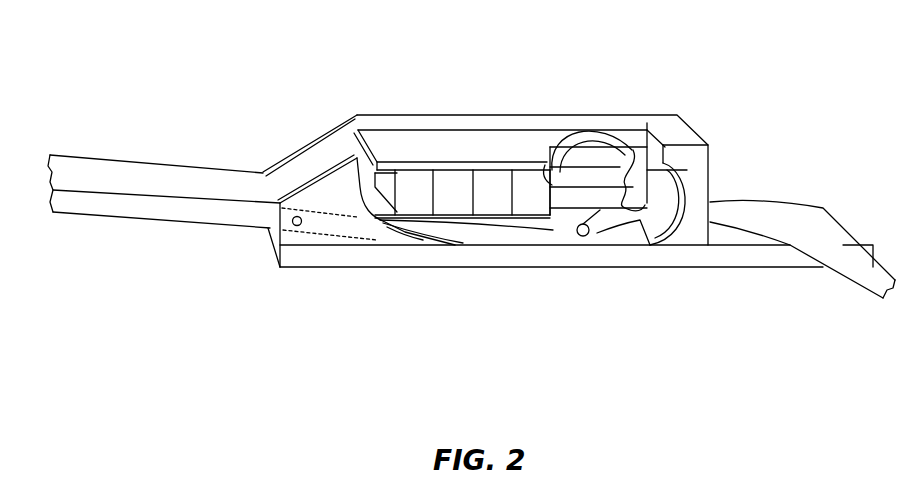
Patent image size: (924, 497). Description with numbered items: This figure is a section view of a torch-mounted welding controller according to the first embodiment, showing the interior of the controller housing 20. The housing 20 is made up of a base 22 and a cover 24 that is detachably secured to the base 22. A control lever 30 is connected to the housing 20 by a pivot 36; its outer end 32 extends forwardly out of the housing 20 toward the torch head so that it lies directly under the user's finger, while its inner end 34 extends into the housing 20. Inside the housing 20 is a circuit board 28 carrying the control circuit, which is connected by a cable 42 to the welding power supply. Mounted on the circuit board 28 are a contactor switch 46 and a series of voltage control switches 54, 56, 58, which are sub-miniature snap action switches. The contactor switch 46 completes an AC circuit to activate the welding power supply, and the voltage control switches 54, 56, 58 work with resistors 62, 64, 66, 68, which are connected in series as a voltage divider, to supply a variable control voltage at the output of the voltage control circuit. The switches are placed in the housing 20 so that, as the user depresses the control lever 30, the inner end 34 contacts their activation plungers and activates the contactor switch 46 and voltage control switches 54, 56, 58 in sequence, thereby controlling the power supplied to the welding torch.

The controller housing 20 is at (650, 116).
The base 22 is at (688, 258).
The cover 24 is at (326, 124).
The circuit board 28 is at (385, 133).
The control lever 30 is at (180, 221).
The outer end 32 is at (122, 152).
The inner end 34 is at (403, 228).
The pivot 36 is at (308, 225).
The cable 42 is at (745, 213).
The contactor switch 46 is at (413, 200).
The voltage control switch 54 is at (452, 202).
The voltage control switch 56 is at (490, 202).
The voltage control switch 58 is at (528, 202).
The resistor 62 is at (587, 140).
The resistor 64 is at (667, 121).
The resistor 66 is at (669, 134).
The resistor 68 is at (673, 123).